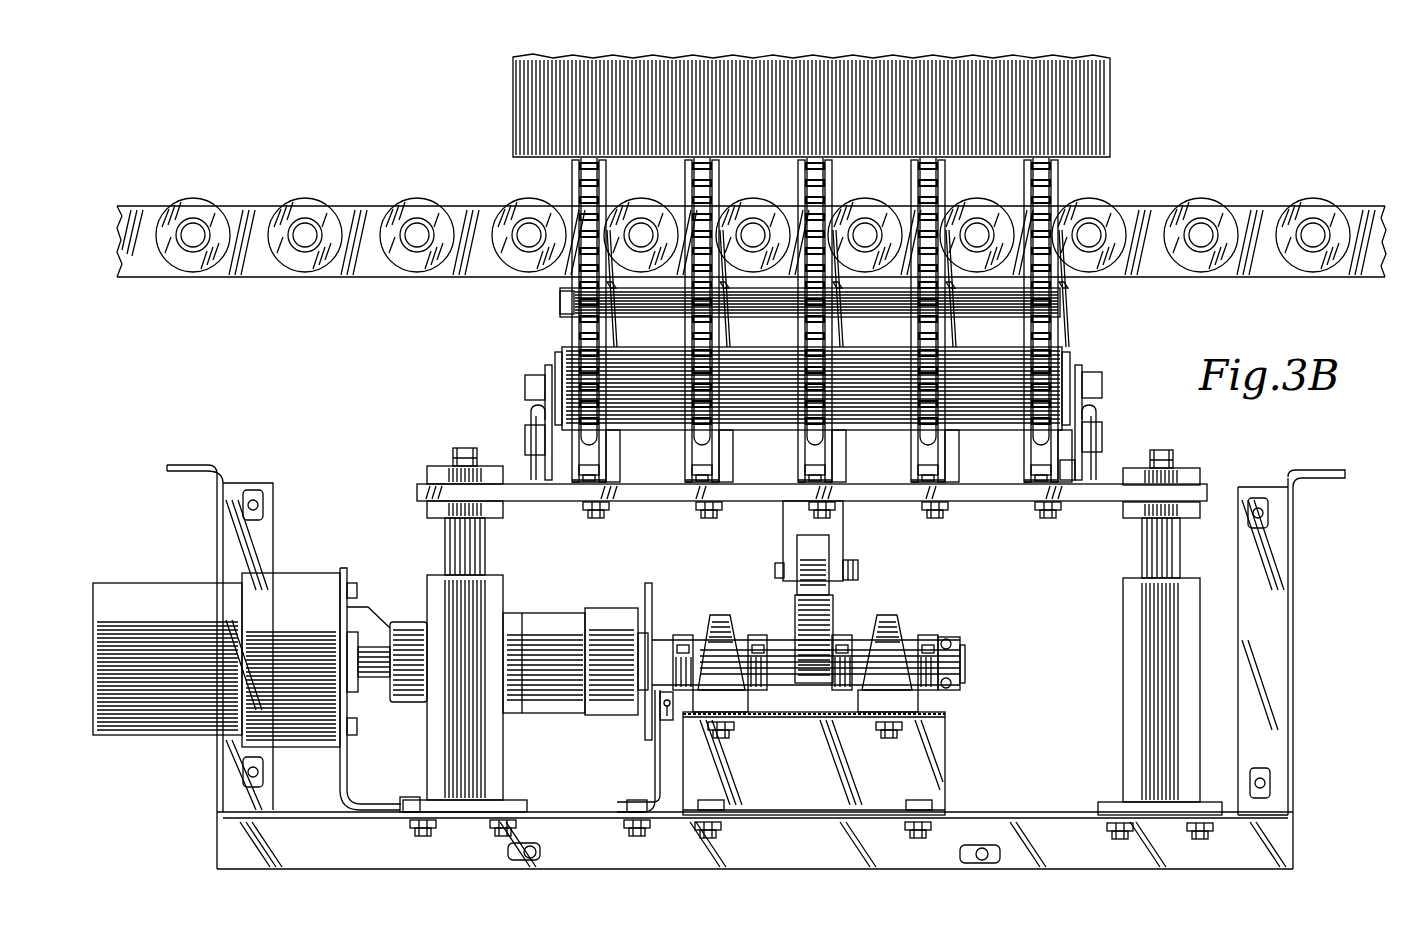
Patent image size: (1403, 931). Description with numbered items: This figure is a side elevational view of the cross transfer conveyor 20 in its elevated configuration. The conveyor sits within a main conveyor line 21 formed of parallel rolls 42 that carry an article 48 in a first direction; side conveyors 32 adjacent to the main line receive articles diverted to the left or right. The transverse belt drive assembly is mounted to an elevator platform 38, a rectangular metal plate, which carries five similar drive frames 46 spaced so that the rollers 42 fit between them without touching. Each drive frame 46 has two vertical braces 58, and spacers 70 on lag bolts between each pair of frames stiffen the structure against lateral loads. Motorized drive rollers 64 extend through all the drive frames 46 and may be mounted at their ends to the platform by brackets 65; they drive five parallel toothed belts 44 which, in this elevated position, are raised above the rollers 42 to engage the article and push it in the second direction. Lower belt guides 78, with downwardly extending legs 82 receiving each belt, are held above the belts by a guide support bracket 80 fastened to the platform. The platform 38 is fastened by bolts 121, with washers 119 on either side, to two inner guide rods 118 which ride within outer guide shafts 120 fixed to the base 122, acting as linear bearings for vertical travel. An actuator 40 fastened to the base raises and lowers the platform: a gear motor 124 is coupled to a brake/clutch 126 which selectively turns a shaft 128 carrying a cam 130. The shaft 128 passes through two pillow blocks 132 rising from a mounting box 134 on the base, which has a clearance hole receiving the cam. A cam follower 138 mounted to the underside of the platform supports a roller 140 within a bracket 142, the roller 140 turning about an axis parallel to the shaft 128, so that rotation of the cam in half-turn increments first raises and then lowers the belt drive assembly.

The cross transfer conveyor 20 is at (1137, 390).
The main conveyor line 21 is at (1152, 205).
The side conveyor 32 is at (734, 684).
The elevator platform 38 is at (1095, 503).
The actuator 40 is at (991, 704).
The rolls 42 is at (634, 200).
The belts 44 is at (1050, 297).
The drive frame 46 is at (912, 440).
The article 48 is at (830, 111).
The vertical brace 58 is at (729, 338).
The drive rollers 64 is at (882, 398).
The brackets 65 is at (545, 368).
The spacers 70 is at (780, 310).
The lower belt guide 78 is at (605, 462).
The guide support bracket 80 is at (527, 412).
The legs 82 is at (717, 462).
The inner guide rod 118 is at (483, 533).
The washers 119 is at (433, 466).
The outer guide shaft 120 is at (500, 748).
The bolts 121 is at (465, 447).
The base 122 is at (1038, 815).
The gear motor 124 is at (300, 573).
The brake/clutch 126 is at (553, 622).
The shaft 128 is at (778, 690).
The cam 130 is at (810, 725).
The pillow blocks 132 is at (718, 618).
The mounting box 134 is at (947, 775).
The cam follower 138 is at (879, 567).
The roller 140 is at (805, 553).
The bracket 142 is at (845, 523).